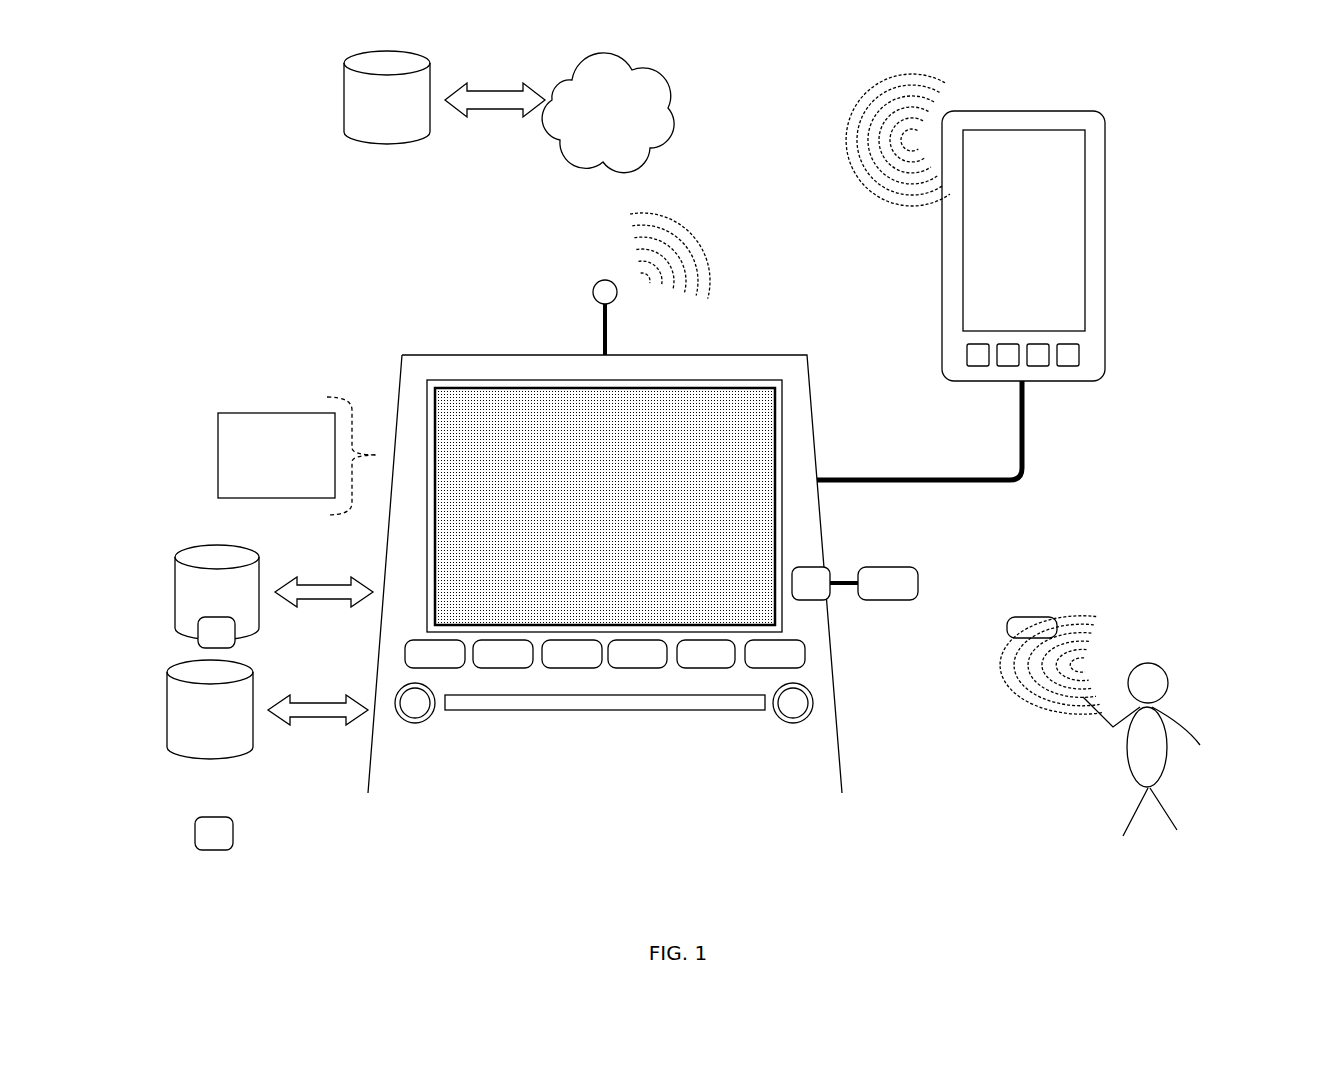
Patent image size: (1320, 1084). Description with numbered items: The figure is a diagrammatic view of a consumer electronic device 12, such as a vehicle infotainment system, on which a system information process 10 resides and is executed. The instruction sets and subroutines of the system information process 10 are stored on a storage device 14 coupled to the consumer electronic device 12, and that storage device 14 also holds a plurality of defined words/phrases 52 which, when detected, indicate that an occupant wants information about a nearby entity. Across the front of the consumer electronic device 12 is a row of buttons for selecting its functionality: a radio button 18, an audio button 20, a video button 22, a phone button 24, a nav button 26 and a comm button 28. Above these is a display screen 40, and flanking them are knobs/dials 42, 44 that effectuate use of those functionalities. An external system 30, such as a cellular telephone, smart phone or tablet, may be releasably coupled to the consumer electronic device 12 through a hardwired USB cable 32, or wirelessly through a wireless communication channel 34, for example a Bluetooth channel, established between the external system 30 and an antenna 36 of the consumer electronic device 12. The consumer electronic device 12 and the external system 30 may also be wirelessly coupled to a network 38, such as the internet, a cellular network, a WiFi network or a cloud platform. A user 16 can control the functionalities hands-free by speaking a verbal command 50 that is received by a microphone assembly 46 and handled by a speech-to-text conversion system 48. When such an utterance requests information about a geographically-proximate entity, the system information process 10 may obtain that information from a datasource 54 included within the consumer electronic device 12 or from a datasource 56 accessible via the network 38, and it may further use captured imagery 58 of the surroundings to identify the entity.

The system information process 10 is at (216, 431).
The consumer electronic device 12 is at (383, 335).
The storage device 14 is at (274, 592).
The user 16 is at (1173, 682).
The radio button 18 is at (452, 668).
The audio button 20 is at (518, 668).
The video button 22 is at (587, 668).
The phone button 24 is at (652, 668).
The nav button 26 is at (720, 668).
The comm button 28 is at (805, 652).
The external system 30 is at (975, 227).
The USB cable 32 is at (937, 478).
The wireless communication channel 34 is at (758, 152).
The antenna 36 is at (600, 325).
The network 38 is at (608, 113).
The display screen 40 is at (783, 402).
The knob/dial 42 is at (400, 723).
The knob/dial 44 is at (798, 725).
The microphone assembly 46 is at (918, 583).
The speech-to-text conversion system 48 is at (825, 583).
The verbal command 50 is at (1051, 665).
The words/phrases 52 is at (216, 632).
The datasource 54 is at (267, 709).
The datasource 56 is at (444, 97).
The captured imagery 58 is at (214, 833).